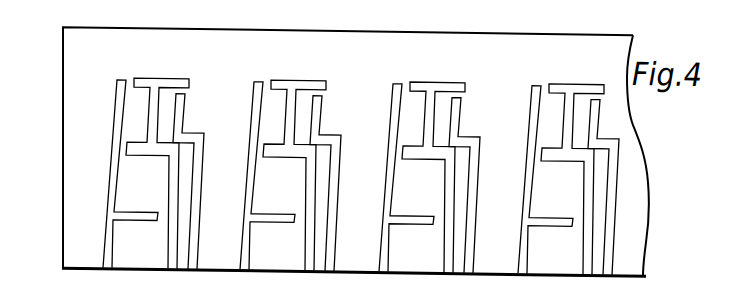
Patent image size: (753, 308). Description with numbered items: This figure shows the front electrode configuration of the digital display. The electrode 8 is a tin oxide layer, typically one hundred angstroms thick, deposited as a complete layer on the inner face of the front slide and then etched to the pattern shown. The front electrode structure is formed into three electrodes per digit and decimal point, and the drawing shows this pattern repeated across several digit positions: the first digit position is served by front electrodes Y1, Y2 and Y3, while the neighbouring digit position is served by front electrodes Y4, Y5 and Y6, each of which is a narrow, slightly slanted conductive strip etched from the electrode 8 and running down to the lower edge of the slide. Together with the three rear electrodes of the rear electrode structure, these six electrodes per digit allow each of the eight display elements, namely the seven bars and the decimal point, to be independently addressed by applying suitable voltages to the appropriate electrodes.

The electrode 8 is at (161, 76).
The front electrode Y1 is at (105, 258).
The front electrode Y2 is at (166, 252).
The front electrode Y3 is at (188, 259).
The front electrode Y4 is at (247, 258).
The front electrode Y5 is at (307, 262).
The front electrode Y6 is at (327, 260).